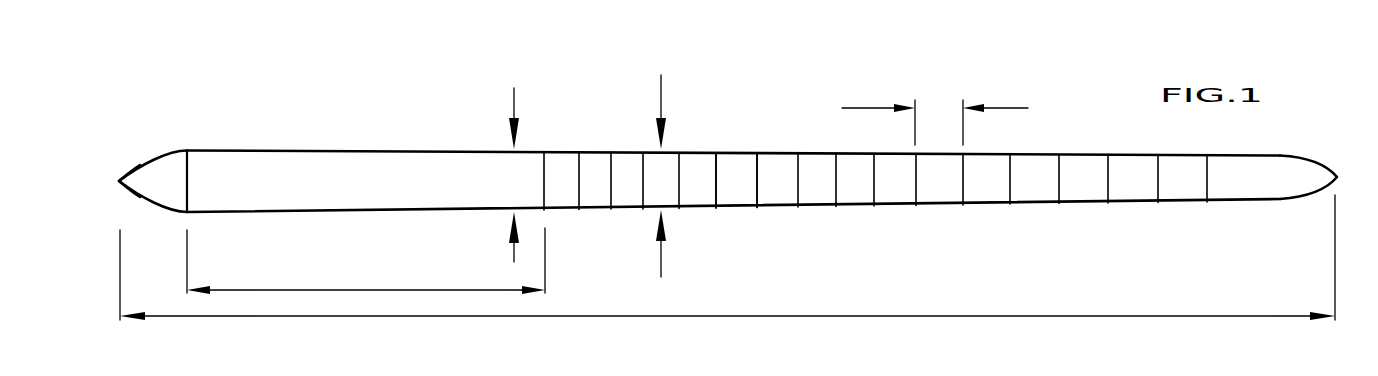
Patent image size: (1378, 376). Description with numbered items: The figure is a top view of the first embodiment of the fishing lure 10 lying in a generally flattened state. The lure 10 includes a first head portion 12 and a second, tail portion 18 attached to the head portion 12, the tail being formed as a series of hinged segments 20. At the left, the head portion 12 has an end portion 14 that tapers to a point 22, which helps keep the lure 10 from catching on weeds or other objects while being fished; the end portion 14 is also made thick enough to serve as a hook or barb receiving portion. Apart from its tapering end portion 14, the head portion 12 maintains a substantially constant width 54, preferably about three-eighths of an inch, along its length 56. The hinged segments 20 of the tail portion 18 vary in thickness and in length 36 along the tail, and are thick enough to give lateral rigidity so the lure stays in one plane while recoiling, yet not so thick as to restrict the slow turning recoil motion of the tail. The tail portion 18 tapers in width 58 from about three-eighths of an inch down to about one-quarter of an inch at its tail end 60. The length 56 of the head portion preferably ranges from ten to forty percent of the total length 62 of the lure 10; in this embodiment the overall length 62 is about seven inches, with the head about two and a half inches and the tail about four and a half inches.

The fishing lure 10 is at (278, 60).
The head portion 12 is at (347, 150).
The end portion 14 is at (155, 153).
The point 22 is at (119, 181).
The second portion 18 is at (780, 150).
The hinged segments 20 is at (728, 200).
The length 36 is at (926, 106).
The width 54 is at (515, 97).
The width 58 is at (662, 85).
The length 56 is at (383, 288).
The tail end 60 is at (1297, 157).
The total length 62 is at (600, 318).